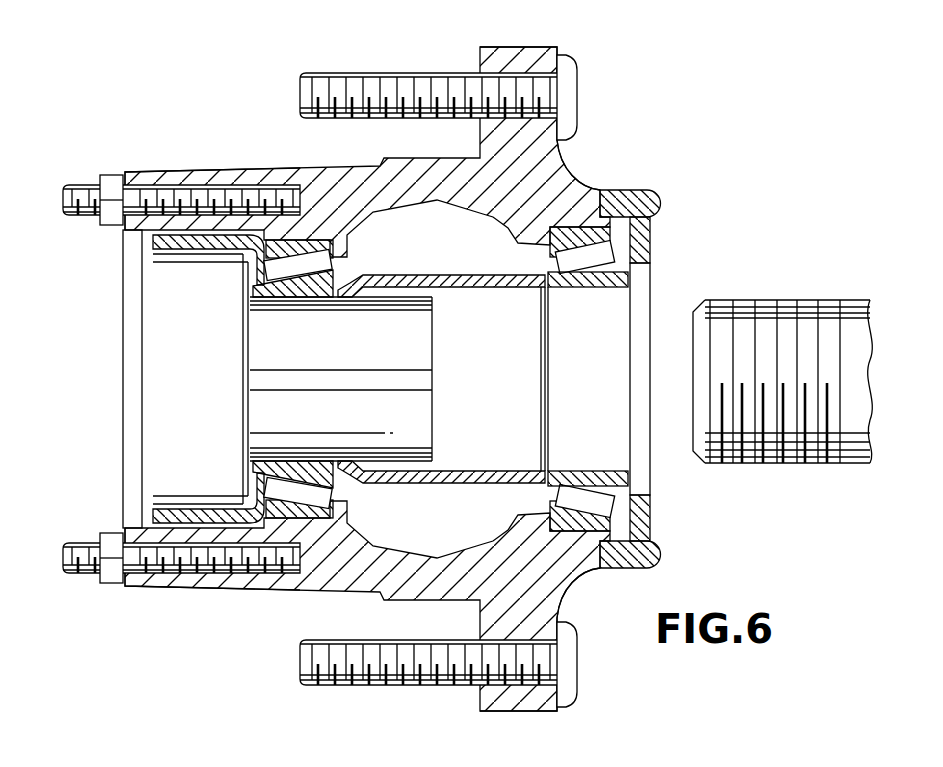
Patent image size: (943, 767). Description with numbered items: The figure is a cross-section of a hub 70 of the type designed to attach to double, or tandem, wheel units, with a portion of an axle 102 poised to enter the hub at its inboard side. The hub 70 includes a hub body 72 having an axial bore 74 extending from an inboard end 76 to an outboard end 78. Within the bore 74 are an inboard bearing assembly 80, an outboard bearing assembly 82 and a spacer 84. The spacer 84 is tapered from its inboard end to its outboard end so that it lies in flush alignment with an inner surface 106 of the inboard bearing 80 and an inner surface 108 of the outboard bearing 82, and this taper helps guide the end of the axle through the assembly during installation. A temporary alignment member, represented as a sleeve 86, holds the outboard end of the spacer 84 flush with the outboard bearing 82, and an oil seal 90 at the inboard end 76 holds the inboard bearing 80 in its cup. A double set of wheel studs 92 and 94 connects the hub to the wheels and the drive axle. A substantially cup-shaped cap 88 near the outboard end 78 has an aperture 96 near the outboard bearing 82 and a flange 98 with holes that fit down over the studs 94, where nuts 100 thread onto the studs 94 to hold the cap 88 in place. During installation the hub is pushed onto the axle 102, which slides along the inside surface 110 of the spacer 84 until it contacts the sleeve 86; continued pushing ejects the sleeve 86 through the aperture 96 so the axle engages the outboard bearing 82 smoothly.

The hub 70 is at (658, 104).
The hub body 72 is at (580, 185).
The axial bore 74 is at (413, 233).
The inboard end 76 is at (688, 270).
The outboard end 78 is at (90, 373).
The inboard bearing assembly 80 is at (580, 289).
The outboard bearing assembly 82 is at (306, 312).
The spacer 84 is at (430, 484).
The sleeve 86 is at (243, 413).
The cap 88 is at (123, 312).
The oil seal 90 is at (660, 238).
The wheel studs 92 is at (355, 72).
The wheel studs 94 is at (82, 185).
The aperture 96 is at (243, 460).
The flange 98 is at (143, 172).
The nuts 100 is at (112, 228).
The axle 102 is at (838, 464).
The inner surface 106 is at (277, 298).
The inner surface 108 is at (585, 470).
The inside surface 110 is at (476, 470).